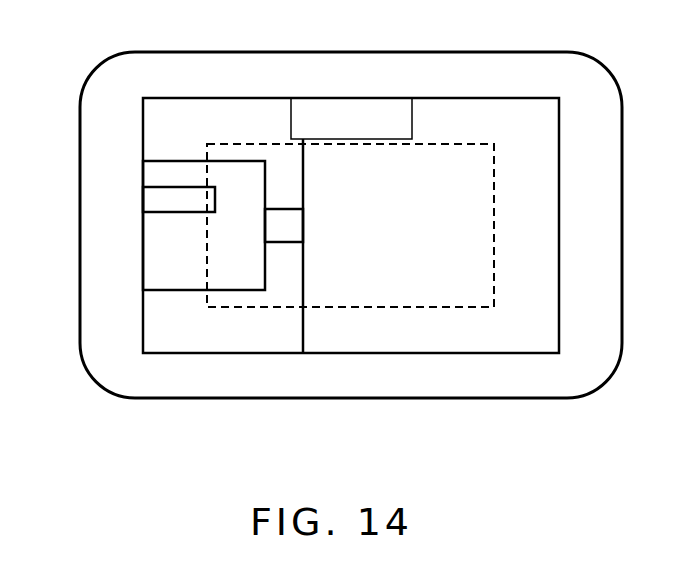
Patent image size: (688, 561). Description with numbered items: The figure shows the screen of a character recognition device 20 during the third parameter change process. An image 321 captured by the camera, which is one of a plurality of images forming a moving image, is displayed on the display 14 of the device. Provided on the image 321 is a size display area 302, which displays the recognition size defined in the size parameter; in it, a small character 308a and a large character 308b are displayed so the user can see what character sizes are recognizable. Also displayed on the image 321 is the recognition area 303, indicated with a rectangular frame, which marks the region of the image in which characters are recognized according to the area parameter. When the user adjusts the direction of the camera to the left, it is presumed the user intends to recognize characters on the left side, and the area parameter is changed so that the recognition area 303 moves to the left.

The character recognition device 20 is at (548, 52).
The display 14 is at (143, 318).
The size display area 302 is at (350, 97).
The character 308a is at (315, 107).
The character 308b is at (383, 106).
The recognition area 303 is at (393, 307).
The image 321 is at (233, 340).